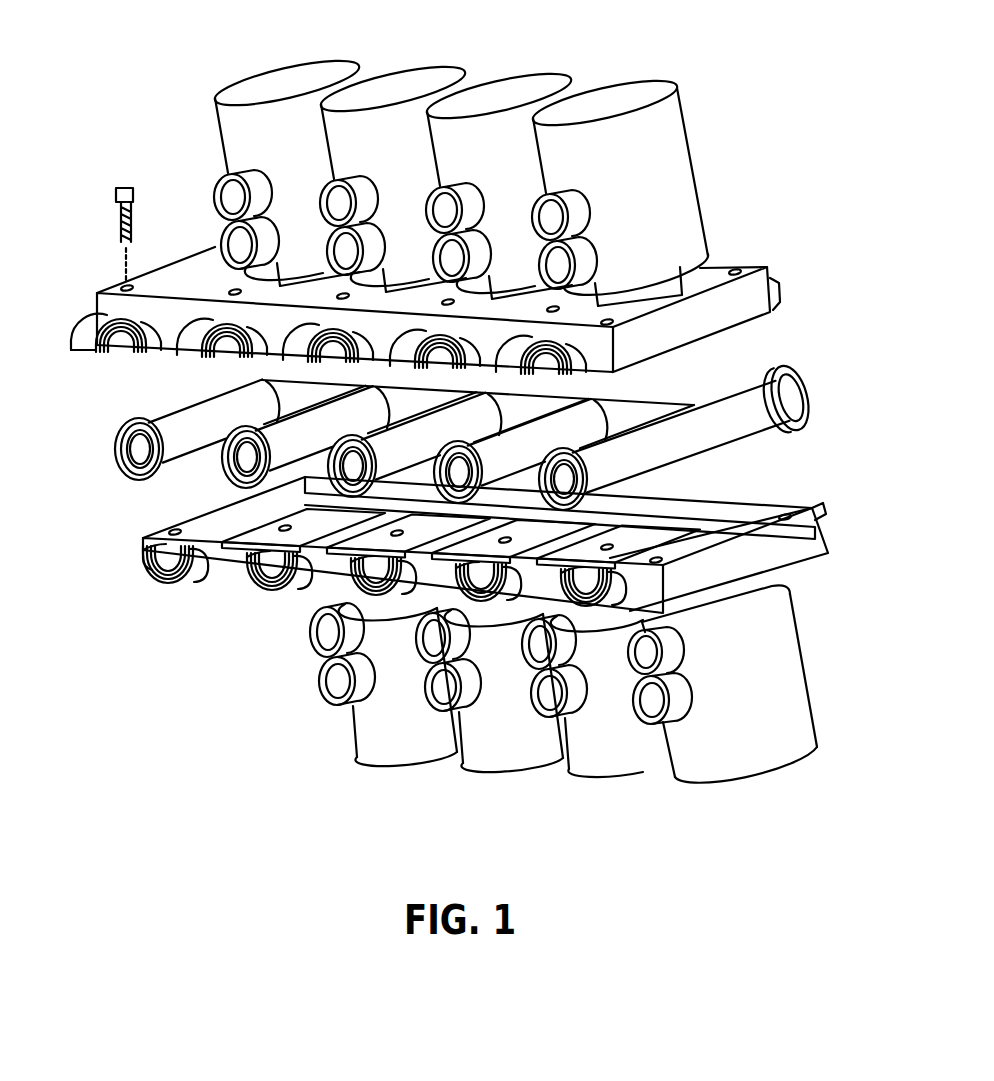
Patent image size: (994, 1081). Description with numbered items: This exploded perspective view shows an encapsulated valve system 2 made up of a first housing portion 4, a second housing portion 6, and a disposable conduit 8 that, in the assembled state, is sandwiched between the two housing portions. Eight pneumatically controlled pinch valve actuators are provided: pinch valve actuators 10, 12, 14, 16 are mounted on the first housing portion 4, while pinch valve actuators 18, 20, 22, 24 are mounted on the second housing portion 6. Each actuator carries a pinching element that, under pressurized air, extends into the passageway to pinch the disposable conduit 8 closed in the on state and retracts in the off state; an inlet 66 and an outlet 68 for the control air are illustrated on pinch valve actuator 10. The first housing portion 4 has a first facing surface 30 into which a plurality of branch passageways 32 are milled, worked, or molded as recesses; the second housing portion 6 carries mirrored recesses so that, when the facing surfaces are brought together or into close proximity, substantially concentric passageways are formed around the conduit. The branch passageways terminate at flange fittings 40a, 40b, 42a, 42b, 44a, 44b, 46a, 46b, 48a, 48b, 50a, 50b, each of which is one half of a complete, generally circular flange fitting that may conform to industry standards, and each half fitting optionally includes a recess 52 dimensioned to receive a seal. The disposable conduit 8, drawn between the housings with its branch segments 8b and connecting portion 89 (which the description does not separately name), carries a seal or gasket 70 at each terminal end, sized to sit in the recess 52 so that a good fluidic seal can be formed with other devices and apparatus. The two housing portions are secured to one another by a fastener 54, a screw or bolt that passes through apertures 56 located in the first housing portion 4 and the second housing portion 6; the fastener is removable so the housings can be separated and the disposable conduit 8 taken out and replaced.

The encapsulated valve system 2 is at (824, 230).
The first housing portion 4 is at (808, 560).
The second housing portion 6 is at (742, 315).
The disposable conduit 8 is at (750, 430).
The tube branches 8b is at (178, 410).
The pinch valve actuator 10 is at (722, 709).
The pinch valve actuator 12 is at (605, 772).
The pinch valve actuator 14 is at (492, 760).
The pinch valve actuator 16 is at (383, 750).
The pinch valve actuator 18 is at (628, 86).
The pinch valve actuator 20 is at (530, 84).
The pinch valve actuator 22 is at (430, 76).
The pinch valve actuator 24 is at (323, 72).
The first facing surface 30 is at (672, 528).
The branch passageways 32 is at (232, 530).
The flange fitting 40a is at (824, 507).
The flange fitting 40b is at (780, 286).
The flange fitting 42a is at (595, 610).
The flange fitting 42b is at (546, 355).
The flange fitting 44a is at (490, 605).
The flange fitting 44b is at (440, 346).
The flange fitting 46a is at (385, 600).
The flange fitting 46b is at (330, 338).
The flange fitting 48a is at (270, 600).
The flange fitting 48b is at (203, 336).
The flange fitting 50a is at (160, 593).
The flange fitting 50b is at (100, 330).
The recess 52 is at (112, 352).
The fastener 54 is at (123, 186).
The apertures 56 is at (120, 284).
The inlet 66 is at (652, 714).
The outlet 68 is at (652, 660).
The seal or gasket 70 is at (235, 432).
The cross bar 89 is at (420, 386).